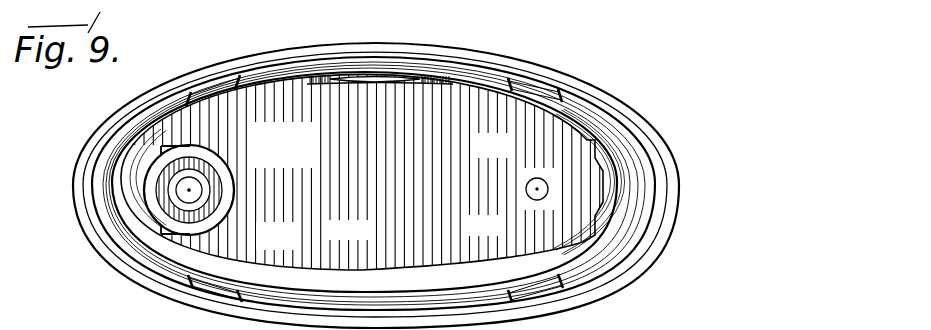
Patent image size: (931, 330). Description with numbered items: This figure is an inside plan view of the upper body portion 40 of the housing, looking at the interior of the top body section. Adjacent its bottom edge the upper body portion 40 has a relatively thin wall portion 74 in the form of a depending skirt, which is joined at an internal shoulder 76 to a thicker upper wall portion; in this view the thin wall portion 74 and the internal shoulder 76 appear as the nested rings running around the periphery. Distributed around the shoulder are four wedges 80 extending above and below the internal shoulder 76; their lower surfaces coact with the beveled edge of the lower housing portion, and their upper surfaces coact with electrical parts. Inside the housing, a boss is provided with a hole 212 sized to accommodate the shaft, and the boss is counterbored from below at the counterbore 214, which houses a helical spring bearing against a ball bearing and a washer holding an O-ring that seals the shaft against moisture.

The upper body portion 40 is at (108, 270).
The relatively thin wall portion 74 is at (340, 47).
The internal shoulder 76 is at (412, 57).
The wedges 80 is at (217, 97).
The hole 212 is at (205, 190).
The counterbore 214 is at (220, 203).